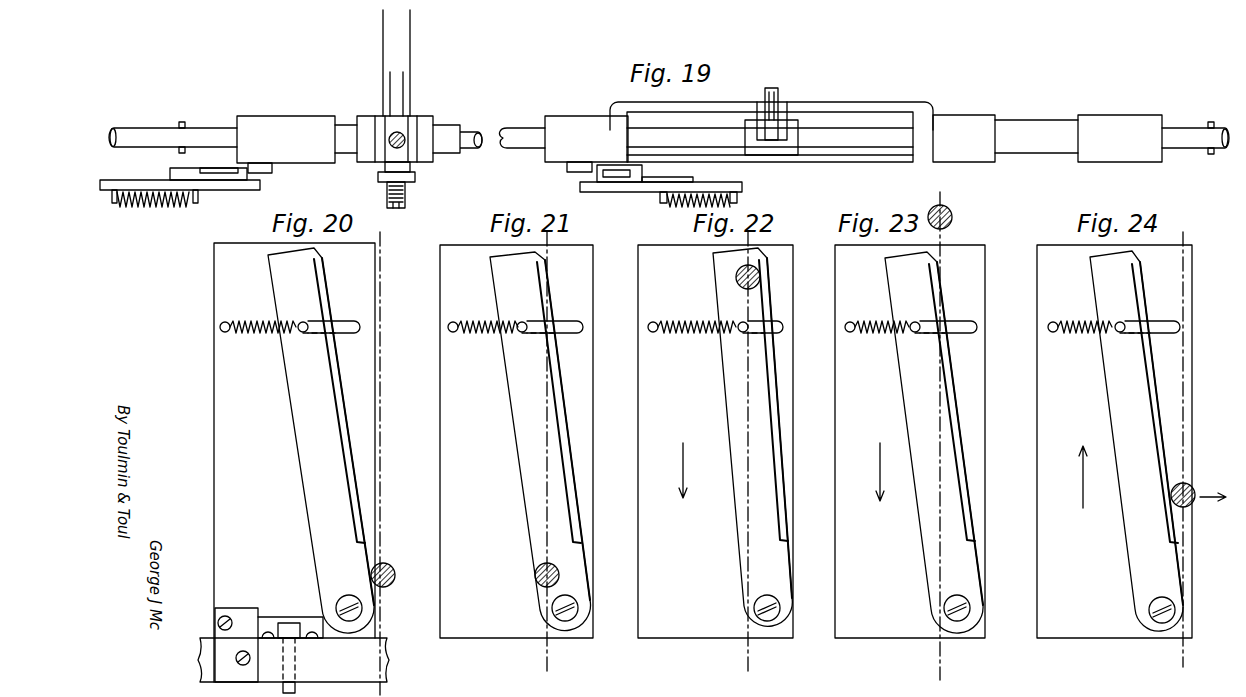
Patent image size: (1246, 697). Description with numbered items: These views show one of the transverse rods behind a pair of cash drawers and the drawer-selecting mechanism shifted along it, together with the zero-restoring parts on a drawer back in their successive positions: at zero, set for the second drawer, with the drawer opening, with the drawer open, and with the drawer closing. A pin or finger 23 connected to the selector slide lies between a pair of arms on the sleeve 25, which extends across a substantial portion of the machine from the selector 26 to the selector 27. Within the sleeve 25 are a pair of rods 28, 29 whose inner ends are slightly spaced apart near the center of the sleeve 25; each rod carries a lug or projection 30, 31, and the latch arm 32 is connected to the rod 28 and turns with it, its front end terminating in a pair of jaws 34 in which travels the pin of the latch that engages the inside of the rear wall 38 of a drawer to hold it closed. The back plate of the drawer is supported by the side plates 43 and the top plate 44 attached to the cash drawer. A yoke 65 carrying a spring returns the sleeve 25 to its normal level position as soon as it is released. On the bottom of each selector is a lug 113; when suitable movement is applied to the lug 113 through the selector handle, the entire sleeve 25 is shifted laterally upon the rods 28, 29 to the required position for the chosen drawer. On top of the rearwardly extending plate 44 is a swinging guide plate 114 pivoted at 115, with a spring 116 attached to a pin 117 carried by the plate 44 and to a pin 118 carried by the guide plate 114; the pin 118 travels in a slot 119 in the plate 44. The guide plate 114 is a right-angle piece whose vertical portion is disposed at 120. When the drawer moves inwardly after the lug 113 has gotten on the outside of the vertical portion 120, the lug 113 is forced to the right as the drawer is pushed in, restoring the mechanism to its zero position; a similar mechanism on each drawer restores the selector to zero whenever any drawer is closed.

In FIG. 19, the pin or finger 23 is at (400, 138).
In FIG. 19, the sleeve 25 is at (452, 128).
In FIG. 19, the selector 26 is at (275, 126).
In FIG. 19, the selector 27 is at (1110, 121).
In FIG. 19, the rod 28 is at (1185, 130).
In FIG. 19, the rod 29 is at (200, 130).
In FIG. 19, the lug or projection 30 is at (1211, 122).
In FIG. 19, the lug or projection 31 is at (181, 122).
In FIG. 19, the latch arm 32 is at (778, 92).
In FIG. 19, the pair of jaws 34 is at (760, 112).
In FIG. 20, the rear wall 38 is at (327, 670).
In FIG. 19, the side plates 43 is at (272, 170).
In FIG. 19, the top plate 44 is at (145, 187).
In FIG. 20, the top plate 44 is at (268, 424).
In FIG. 21, the top plate 44 is at (489, 437).
In FIG. 22, the top plate 44 is at (699, 431).
In FIG. 23, the top plate 44 is at (891, 544).
In FIG. 24, the top plate 44 is at (1098, 565).
In FIG. 19, the yoke 65 is at (397, 95).
In FIG. 20, the lug 113 is at (392, 571).
In FIG. 21, the lug 113 is at (560, 575).
In FIG. 22, the lug 113 is at (760, 275).
In FIG. 23, the lug 113 is at (953, 216).
In FIG. 24, the lug 113 is at (1220, 490).
In FIG. 19, the swinging guide plate 114 is at (200, 173).
In FIG. 20, the swinging guide plate 114 is at (307, 440).
In FIG. 21, the swinging guide plate 114 is at (527, 448).
In FIG. 22, the swinging guide plate 114 is at (733, 464).
In FIG. 23, the swinging guide plate 114 is at (918, 398).
In FIG. 24, the swinging guide plate 114 is at (1125, 428).
In FIG. 20, the pivot 115 is at (375, 612).
In FIG. 21, the pivot 115 is at (575, 612).
In FIG. 22, the pivot 115 is at (778, 612).
In FIG. 23, the pivot 115 is at (973, 612).
In FIG. 24, the pivot 115 is at (1176, 612).
In FIG. 19, the spring 116 is at (150, 207).
In FIG. 20, the spring 116 is at (243, 340).
In FIG. 21, the spring 116 is at (488, 327).
In FIG. 22, the spring 116 is at (697, 327).
In FIG. 23, the spring 116 is at (882, 327).
In FIG. 24, the spring 116 is at (1085, 327).
In FIG. 19, the pin 117 is at (114, 203).
In FIG. 20, the pin 117 is at (226, 322).
In FIG. 21, the pin 117 is at (455, 322).
In FIG. 22, the pin 117 is at (653, 332).
In FIG. 23, the pin 117 is at (852, 322).
In FIG. 24, the pin 117 is at (1054, 332).
In FIG. 19, the pin 118 is at (195, 204).
In FIG. 20, the pin 118 is at (309, 322).
In FIG. 21, the pin 118 is at (528, 323).
In FIG. 22, the pin 118 is at (750, 325).
In FIG. 23, the pin 118 is at (920, 325).
In FIG. 24, the pin 118 is at (1124, 324).
In FIG. 20, the slot 119 is at (358, 325).
In FIG. 21, the slot 119 is at (580, 325).
In FIG. 22, the slot 119 is at (785, 326).
In FIG. 23, the slot 119 is at (978, 326).
In FIG. 24, the slot 119 is at (1180, 326).
In FIG. 19, the vertical portion 120 is at (226, 168).
In FIG. 20, the vertical portion 120 is at (343, 403).
In FIG. 21, the vertical portion 120 is at (563, 405).
In FIG. 22, the vertical portion 120 is at (775, 438).
In FIG. 23, the vertical portion 120 is at (956, 433).
In FIG. 24, the vertical portion 120 is at (1156, 415).